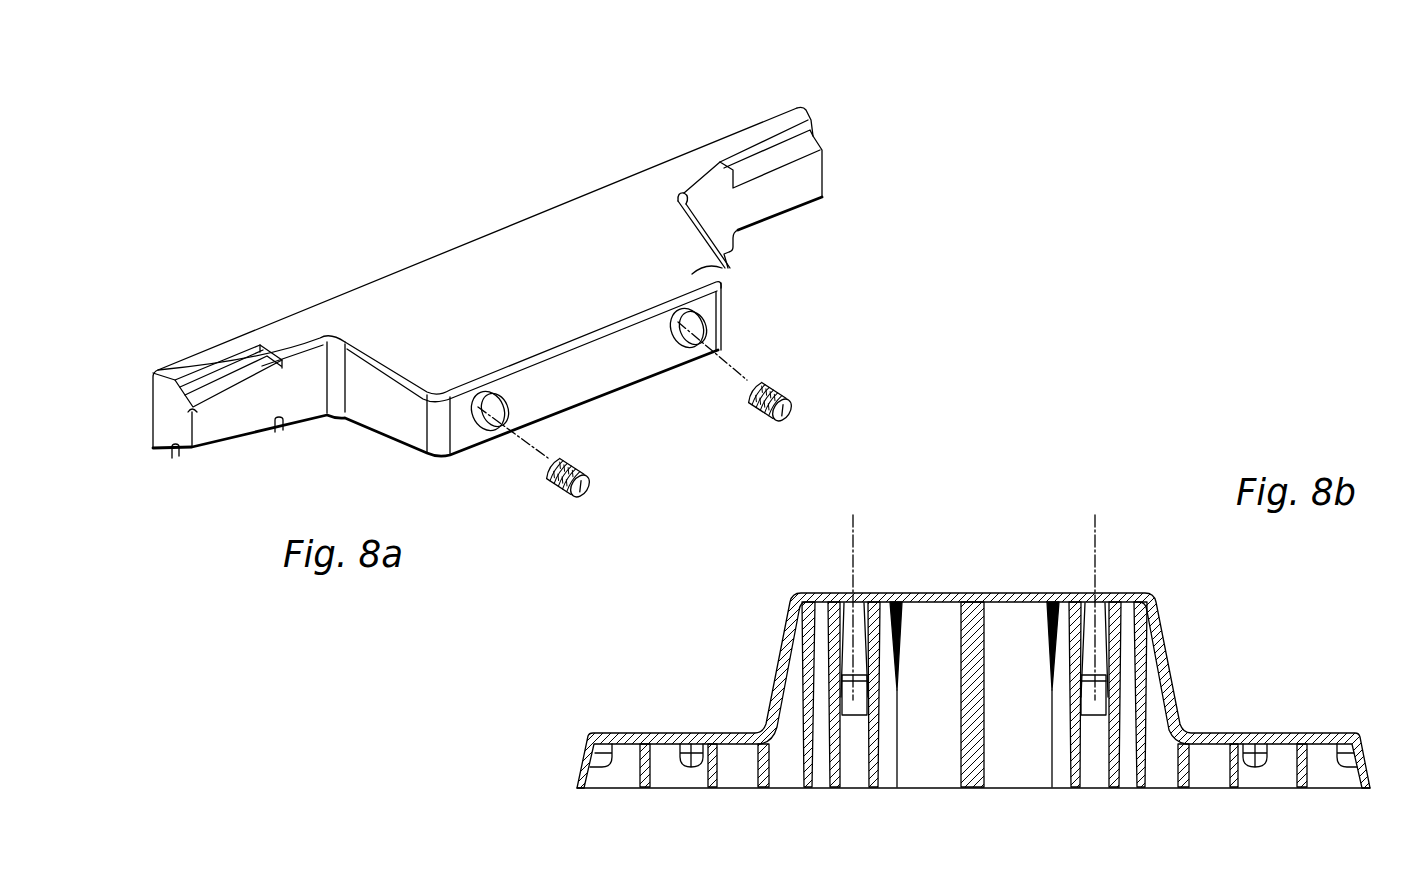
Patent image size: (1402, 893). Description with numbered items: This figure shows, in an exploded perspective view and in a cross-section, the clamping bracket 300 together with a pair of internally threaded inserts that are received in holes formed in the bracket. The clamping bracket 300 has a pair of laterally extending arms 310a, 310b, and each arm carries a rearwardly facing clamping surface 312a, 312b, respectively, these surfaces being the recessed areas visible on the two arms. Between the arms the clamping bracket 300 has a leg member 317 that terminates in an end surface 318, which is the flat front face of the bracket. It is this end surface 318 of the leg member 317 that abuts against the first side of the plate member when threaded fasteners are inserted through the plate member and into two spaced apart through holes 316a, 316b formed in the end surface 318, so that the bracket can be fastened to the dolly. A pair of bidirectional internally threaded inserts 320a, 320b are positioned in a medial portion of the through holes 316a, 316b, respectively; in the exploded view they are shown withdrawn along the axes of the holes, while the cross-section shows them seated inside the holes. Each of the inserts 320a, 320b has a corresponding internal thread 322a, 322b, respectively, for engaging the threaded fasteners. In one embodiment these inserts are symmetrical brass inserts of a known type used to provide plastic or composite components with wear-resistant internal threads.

In FIG. 8A, the clamping bracket 300 is at (504, 222).
In FIG. 8A, the laterally extending arm 310a is at (217, 347).
In FIG. 8A, the laterally extending arm 310b is at (748, 142).
In FIG. 8A, the clamping surface 312a is at (207, 423).
In FIG. 8B, the clamping surface 312a is at (1326, 733).
In FIG. 8A, the clamping surface 312b is at (812, 183).
In FIG. 8B, the clamping surface 312b is at (621, 733).
In FIG. 8A, the through hole 316a is at (483, 422).
In FIG. 8B, the through hole 316a is at (1095, 775).
In FIG. 8A, the through hole 316b is at (681, 340).
In FIG. 8B, the through hole 316b is at (855, 775).
In FIG. 8A, the leg member 317 is at (737, 257).
In FIG. 8A, the end surface 318 is at (611, 374).
In FIG. 8A, the internally threaded insert 320a is at (568, 499).
In FIG. 8B, the internally threaded insert 320a is at (1110, 675).
In FIG. 8A, the internally threaded insert 320b is at (770, 420).
In FIG. 8B, the internally threaded insert 320b is at (860, 673).
In FIG. 8B, the internal thread 322a is at (1097, 700).
In FIG. 8B, the internal thread 322b is at (852, 700).